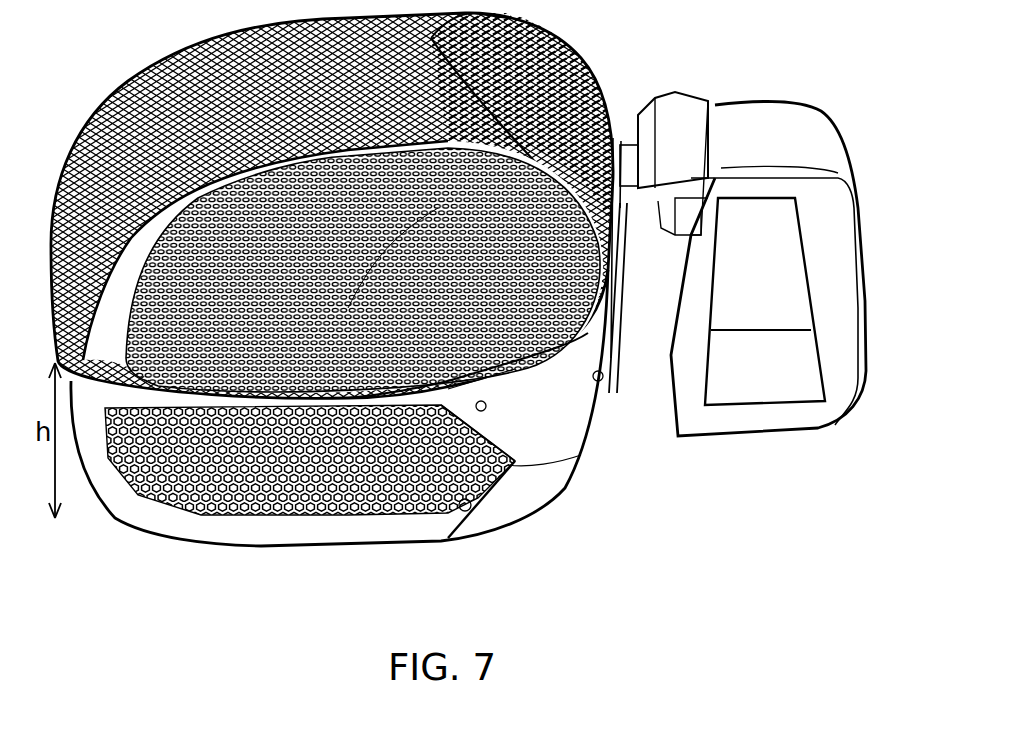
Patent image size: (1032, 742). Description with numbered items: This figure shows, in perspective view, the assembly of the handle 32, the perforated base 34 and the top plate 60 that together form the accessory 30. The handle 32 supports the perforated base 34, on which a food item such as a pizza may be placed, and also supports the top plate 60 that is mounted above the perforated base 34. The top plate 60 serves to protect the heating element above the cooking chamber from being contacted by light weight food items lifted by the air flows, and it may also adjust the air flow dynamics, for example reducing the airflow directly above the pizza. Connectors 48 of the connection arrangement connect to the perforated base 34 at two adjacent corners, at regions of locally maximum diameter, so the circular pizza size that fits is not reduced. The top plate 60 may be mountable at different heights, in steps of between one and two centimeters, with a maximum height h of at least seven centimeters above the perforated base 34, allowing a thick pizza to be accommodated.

The accessory 30 is at (485, 287).
The handle 32 is at (858, 287).
The perforated base 34 is at (110, 498).
The connectors 48 is at (498, 518).
The top plate 60 is at (103, 100).